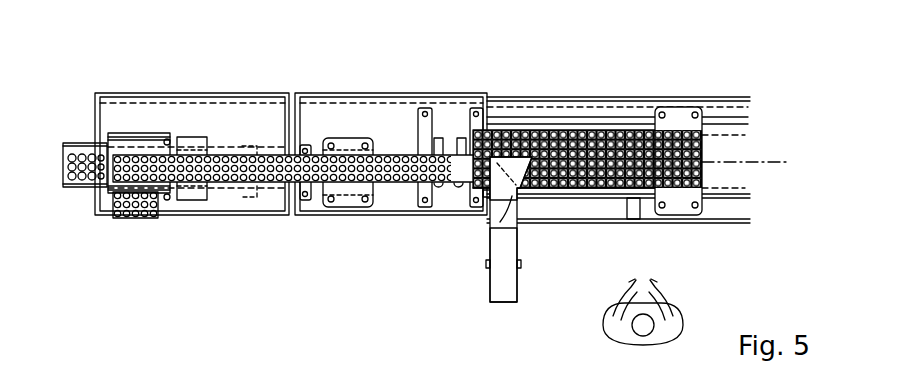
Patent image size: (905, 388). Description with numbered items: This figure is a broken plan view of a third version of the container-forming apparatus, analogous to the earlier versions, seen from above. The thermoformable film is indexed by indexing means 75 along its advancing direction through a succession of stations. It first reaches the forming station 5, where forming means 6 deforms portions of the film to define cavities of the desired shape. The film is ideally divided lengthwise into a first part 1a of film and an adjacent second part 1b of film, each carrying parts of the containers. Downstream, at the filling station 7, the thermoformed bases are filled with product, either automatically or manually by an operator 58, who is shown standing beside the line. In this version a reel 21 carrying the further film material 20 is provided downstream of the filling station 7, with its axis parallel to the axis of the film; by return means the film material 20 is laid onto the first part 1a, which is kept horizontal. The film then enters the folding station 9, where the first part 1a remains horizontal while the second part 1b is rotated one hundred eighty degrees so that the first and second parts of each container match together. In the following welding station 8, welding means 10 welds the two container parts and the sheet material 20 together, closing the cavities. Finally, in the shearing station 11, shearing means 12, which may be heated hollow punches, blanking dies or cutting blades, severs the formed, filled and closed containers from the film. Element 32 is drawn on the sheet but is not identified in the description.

The first part of film 1a is at (688, 188).
The second part of film 1b is at (600, 130).
The forming station 5 is at (693, 93).
The forming means 6 is at (687, 130).
The filling station 7 is at (631, 95).
The welding station 8 is at (344, 226).
The folding station 9 is at (418, 108).
The welding means 10 is at (347, 140).
The shearing station 11 is at (204, 226).
The shearing means 12 is at (205, 137).
The further film material 20 is at (507, 208).
The reel 21 is at (520, 290).
The chute 32 is at (515, 153).
The operator 58 is at (594, 337).
The indexing means 75 is at (548, 121).